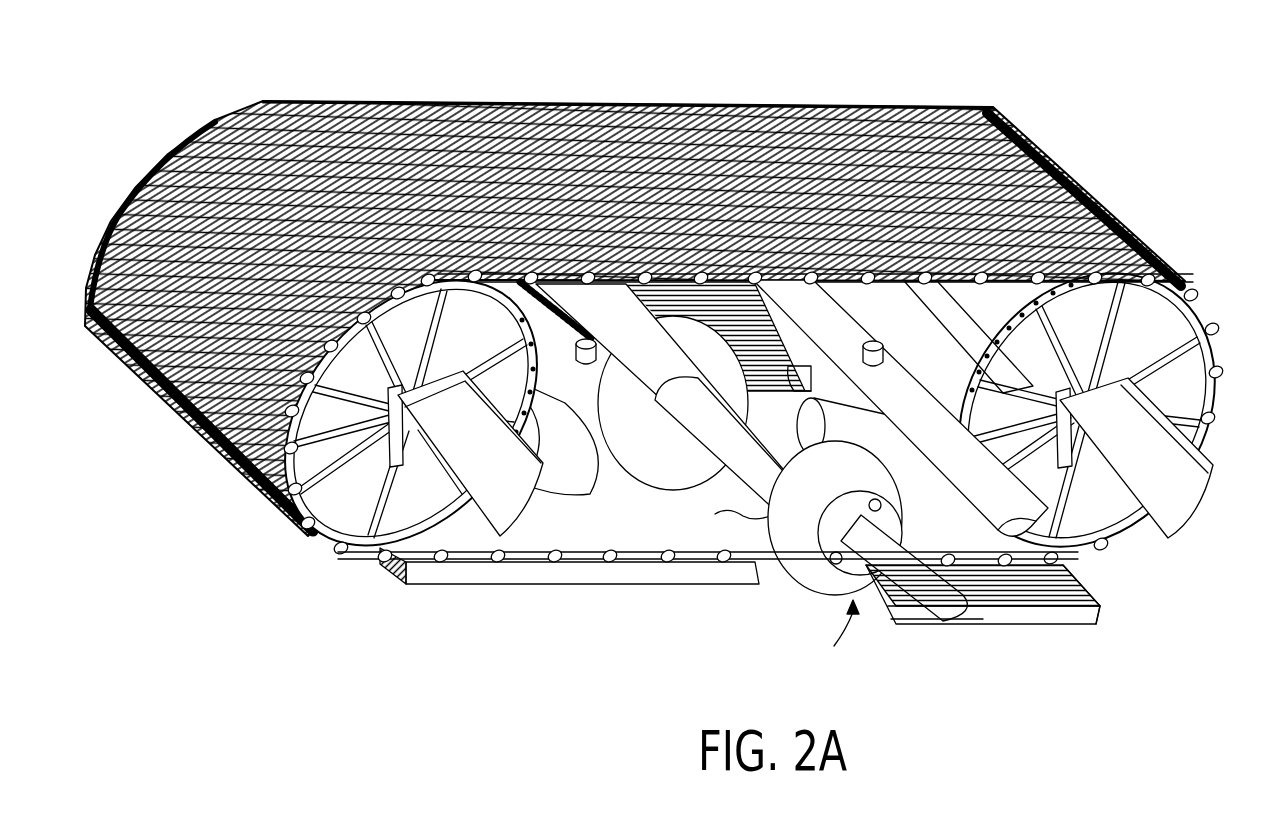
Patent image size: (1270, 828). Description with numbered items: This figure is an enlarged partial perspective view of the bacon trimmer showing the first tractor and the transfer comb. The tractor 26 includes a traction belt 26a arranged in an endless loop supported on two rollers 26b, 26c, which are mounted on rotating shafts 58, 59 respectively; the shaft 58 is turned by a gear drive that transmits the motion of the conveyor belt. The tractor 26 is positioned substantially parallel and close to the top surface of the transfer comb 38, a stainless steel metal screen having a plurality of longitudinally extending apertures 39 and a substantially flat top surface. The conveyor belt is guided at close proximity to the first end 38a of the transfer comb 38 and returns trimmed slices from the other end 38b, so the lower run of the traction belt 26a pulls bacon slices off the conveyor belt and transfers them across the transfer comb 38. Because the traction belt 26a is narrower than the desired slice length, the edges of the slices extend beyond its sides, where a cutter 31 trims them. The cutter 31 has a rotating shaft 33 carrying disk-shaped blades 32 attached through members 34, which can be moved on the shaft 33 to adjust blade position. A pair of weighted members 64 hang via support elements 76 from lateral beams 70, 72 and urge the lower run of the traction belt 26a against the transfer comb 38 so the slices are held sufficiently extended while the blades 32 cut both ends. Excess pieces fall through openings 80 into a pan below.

The tractor 26 is at (366, 82).
The traction belt 26a is at (1012, 125).
The roller 26b is at (1192, 287).
The roller 26c is at (322, 539).
The cutter 31 is at (727, 439).
The disk-shaped blades 32 is at (724, 385).
The rotating shaft 33 is at (923, 608).
The members 34 is at (885, 512).
The transfer comb 38 is at (898, 613).
The first end of the transfer comb 38a is at (1100, 579).
The other end of the transfer comb 38b is at (398, 578).
The longitudinally extending apertures 39 is at (1045, 598).
The rotating shaft 58 is at (1203, 450).
The rotating shaft 59 is at (512, 480).
The weighted members 64 is at (583, 472).
The lateral beam 70 is at (830, 334).
The lateral beam 72 is at (672, 447).
The support elements 76 is at (578, 331).
The openings 80 is at (837, 637).